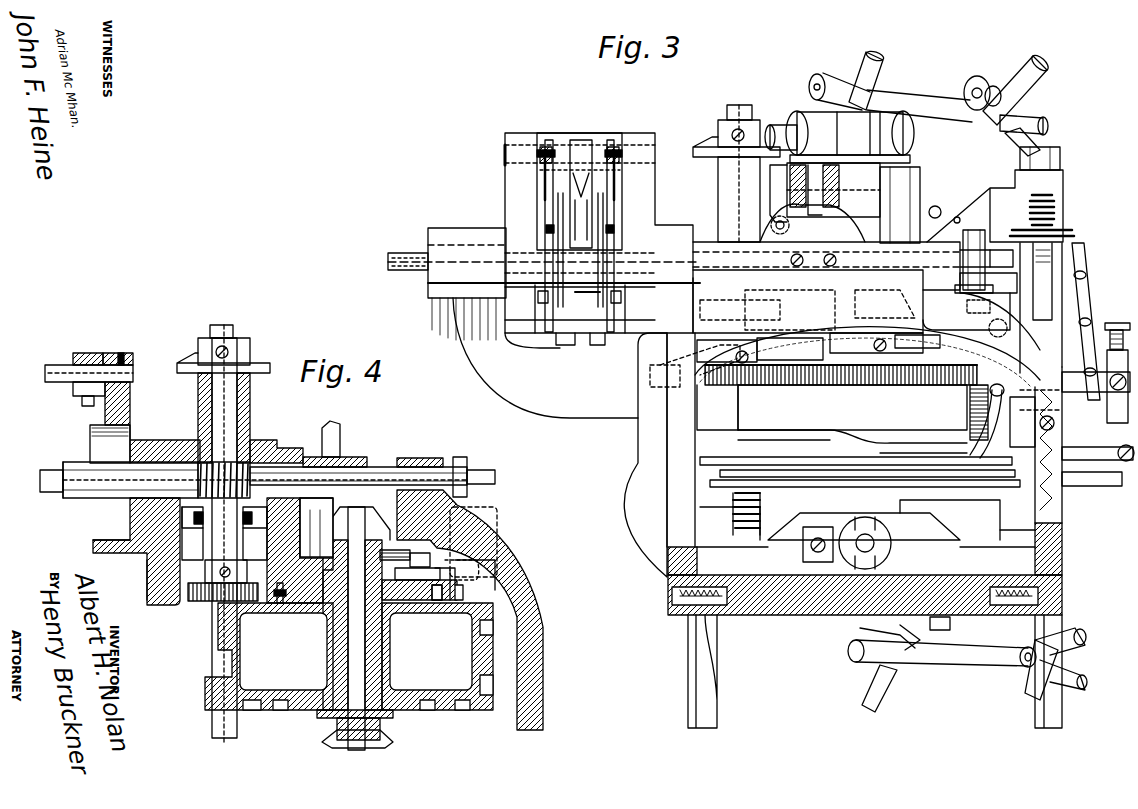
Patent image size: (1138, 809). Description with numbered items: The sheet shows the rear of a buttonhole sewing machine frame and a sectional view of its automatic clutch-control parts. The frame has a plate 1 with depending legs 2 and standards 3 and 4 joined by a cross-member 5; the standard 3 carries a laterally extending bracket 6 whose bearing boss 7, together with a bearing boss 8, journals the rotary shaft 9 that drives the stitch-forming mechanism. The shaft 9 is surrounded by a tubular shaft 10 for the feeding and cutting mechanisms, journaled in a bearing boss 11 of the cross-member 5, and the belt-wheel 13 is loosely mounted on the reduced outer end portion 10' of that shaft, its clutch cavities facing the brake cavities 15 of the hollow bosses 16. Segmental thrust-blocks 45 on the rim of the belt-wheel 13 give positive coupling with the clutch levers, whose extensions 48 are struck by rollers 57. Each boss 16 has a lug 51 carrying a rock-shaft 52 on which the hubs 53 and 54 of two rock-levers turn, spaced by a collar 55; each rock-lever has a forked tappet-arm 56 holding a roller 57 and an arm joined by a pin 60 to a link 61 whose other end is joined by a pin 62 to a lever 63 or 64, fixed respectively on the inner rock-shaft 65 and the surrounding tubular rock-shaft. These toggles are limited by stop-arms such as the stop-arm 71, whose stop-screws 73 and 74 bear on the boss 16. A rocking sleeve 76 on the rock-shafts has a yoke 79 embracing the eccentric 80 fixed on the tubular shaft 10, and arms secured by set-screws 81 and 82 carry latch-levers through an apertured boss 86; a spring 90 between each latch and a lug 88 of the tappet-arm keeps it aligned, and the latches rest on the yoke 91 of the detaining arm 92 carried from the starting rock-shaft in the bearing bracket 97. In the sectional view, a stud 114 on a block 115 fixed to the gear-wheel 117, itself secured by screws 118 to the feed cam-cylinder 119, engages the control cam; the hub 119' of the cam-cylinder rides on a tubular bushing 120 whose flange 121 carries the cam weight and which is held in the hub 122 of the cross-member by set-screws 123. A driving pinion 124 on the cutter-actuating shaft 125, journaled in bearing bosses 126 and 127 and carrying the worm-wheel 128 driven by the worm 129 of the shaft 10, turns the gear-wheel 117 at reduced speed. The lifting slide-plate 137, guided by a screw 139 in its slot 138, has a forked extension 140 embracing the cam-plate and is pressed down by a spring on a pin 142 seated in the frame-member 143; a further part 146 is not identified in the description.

In FIG. 3, the plate 1 is at (805, 613).
In FIG. 3, the depending legs 2 is at (690, 672).
In FIG. 3, the standard 3 is at (659, 455).
In FIG. 4, the standard 3 is at (147, 575).
In FIG. 3, the standard 4 is at (1035, 533).
In FIG. 4, the standard 4 is at (543, 682).
In FIG. 3, the cross-member 5 is at (867, 329).
In FIG. 4, the cross-member 5 is at (508, 536).
In FIG. 3, the laterally extending bracket 6 is at (565, 413).
In FIG. 3, the bearing boss 7 is at (466, 230).
In FIG. 3, the bearing boss 8 is at (853, 266).
In FIG. 4, the bearing boss 8 is at (422, 458).
In FIG. 3, the rotary shaft 9 is at (414, 258).
In FIG. 4, the rotary shaft 9 is at (52, 492).
In FIG. 4, the tubular shaft 10 is at (265, 480).
In FIG. 4, the reduced outer end portion 10' is at (76, 480).
In FIG. 4, the bearing boss 11 is at (160, 440).
In FIG. 3, the belt-wheel 13 is at (572, 333).
In FIG. 4, the brake cavity 15 is at (136, 551).
In FIG. 4, the hollow bosses 16 is at (93, 546).
In FIG. 3, the segmental thrust-blocks 45 is at (600, 333).
In FIG. 3, the clutch-lever extensions 48 is at (600, 288).
In FIG. 3, the upwardly extending lug 51 is at (522, 137).
In FIG. 4, the upwardly extending lug 51 is at (132, 357).
In FIG. 3, the rock-shaft 52 is at (505, 150).
In FIG. 4, the rock-shaft 52 is at (58, 366).
In FIG. 3, the hub 53 is at (548, 137).
In FIG. 3, the hub 54 is at (618, 137).
In FIG. 4, the hub 54 is at (86, 356).
In FIG. 3, the intermediate collar 55 is at (586, 138).
In FIG. 4, the tappet-arm 56 is at (76, 396).
In FIG. 4, the roller 57 is at (88, 406).
In FIG. 3, the pin 60 is at (537, 151).
In FIG. 3, the link 61 is at (545, 172).
In FIG. 3, the pin 62 is at (545, 193).
In FIG. 3, the lever 63 is at (558, 210).
In FIG. 3, the lever 64 is at (616, 196).
In FIG. 3, the inner rock-shaft 65 is at (985, 416).
In FIG. 3, the stop-arm 71 is at (545, 262).
In FIG. 3, the stop-screw 73 is at (538, 296).
In FIG. 3, the stop-screw 74 is at (546, 228).
In FIG. 3, the rocking sleeve 76 is at (903, 331).
In FIG. 3, the yoke 79 is at (812, 308).
In FIG. 4, the actuating cam or eccentric 80 is at (315, 457).
In FIG. 3, the set-screw 81 is at (797, 267).
In FIG. 3, the set-screw 82 is at (830, 267).
In FIG. 3, the apertured boss 86 is at (798, 186).
In FIG. 3, the lug 88 is at (831, 186).
In FIG. 3, the spring 90 is at (842, 195).
In FIG. 3, the yoke 91 is at (778, 193).
In FIG. 3, the detaining arm 92 is at (815, 190).
In FIG. 3, the bearing bracket 97 is at (936, 230).
In FIG. 3, the stud 114 is at (917, 333).
In FIG. 4, the stud 114 is at (410, 556).
In FIG. 4, the block 115 is at (425, 577).
In FIG. 3, the gear-wheel 117 is at (884, 387).
In FIG. 4, the gear-wheel 117 is at (463, 592).
In FIG. 3, the screws 118 is at (866, 513).
In FIG. 4, the screws 118 is at (282, 605).
In FIG. 3, the feed cam-cylinder 119 is at (863, 419).
In FIG. 4, the feed cam-cylinder 119 is at (269, 656).
In FIG. 4, the hub 119' is at (437, 656).
In FIG. 4, the tubular bushing 120 is at (323, 645).
In FIG. 3, the flange 121 is at (739, 173).
In FIG. 4, the flange 121 is at (393, 716).
In FIG. 3, the hub 122 is at (810, 348).
In FIG. 3, the set-screws 123 is at (886, 346).
In FIG. 3, the driving pinion 124 is at (748, 387).
In FIG. 4, the driving pinion 124 is at (200, 601).
In FIG. 3, the cutter-actuating shaft 125 is at (727, 112).
In FIG. 4, the cutter-actuating shaft 125 is at (233, 330).
In FIG. 4, the bearing boss 126 is at (255, 517).
In FIG. 4, the bearing boss 127 is at (250, 410).
In FIG. 4, the worm-wheel 128 is at (252, 488).
In FIG. 4, the worm 129 is at (268, 443).
In FIG. 3, the lifting slide-plate 137 is at (988, 327).
In FIG. 3, the slot 138 is at (1048, 343).
In FIG. 3, the screw 139 is at (990, 308).
In FIG. 4, the forked lateral extension 140 is at (478, 588).
In FIG. 4, the pin 142 is at (467, 497).
In FIG. 4, the frame-member 143 is at (425, 564).
In FIG. 4, the bearing 146 is at (191, 517).